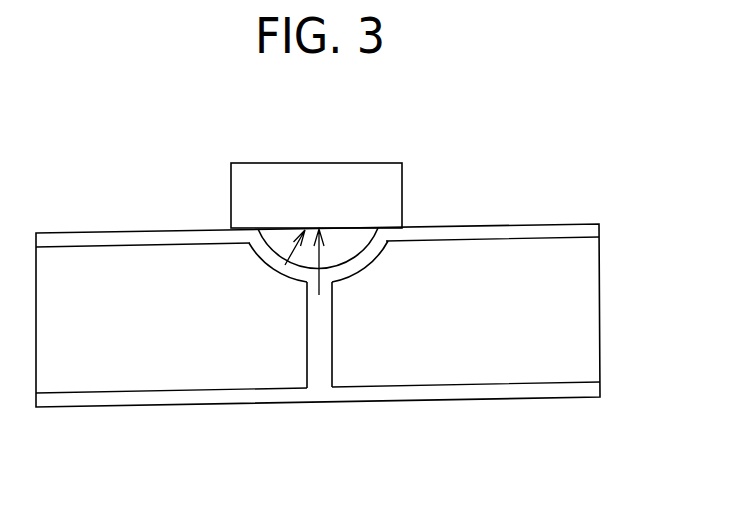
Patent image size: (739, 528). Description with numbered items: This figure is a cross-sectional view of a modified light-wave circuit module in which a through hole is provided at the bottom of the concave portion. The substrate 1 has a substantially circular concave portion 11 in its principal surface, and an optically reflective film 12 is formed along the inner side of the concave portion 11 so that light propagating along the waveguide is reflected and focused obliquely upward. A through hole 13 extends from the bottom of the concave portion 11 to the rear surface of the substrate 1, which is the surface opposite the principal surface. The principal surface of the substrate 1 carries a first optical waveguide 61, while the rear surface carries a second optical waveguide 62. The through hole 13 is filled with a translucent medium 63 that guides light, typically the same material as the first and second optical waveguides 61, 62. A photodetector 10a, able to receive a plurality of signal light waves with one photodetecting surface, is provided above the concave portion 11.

The substrate 1 is at (583, 312).
The photodetector 10a is at (377, 200).
The concave portion 11 is at (400, 257).
The optically reflective film 12 is at (372, 273).
The through hole 13 is at (338, 362).
The first optical waveguide 61 is at (133, 237).
The second optical waveguide 62 is at (80, 404).
The translucent medium 63 is at (312, 322).